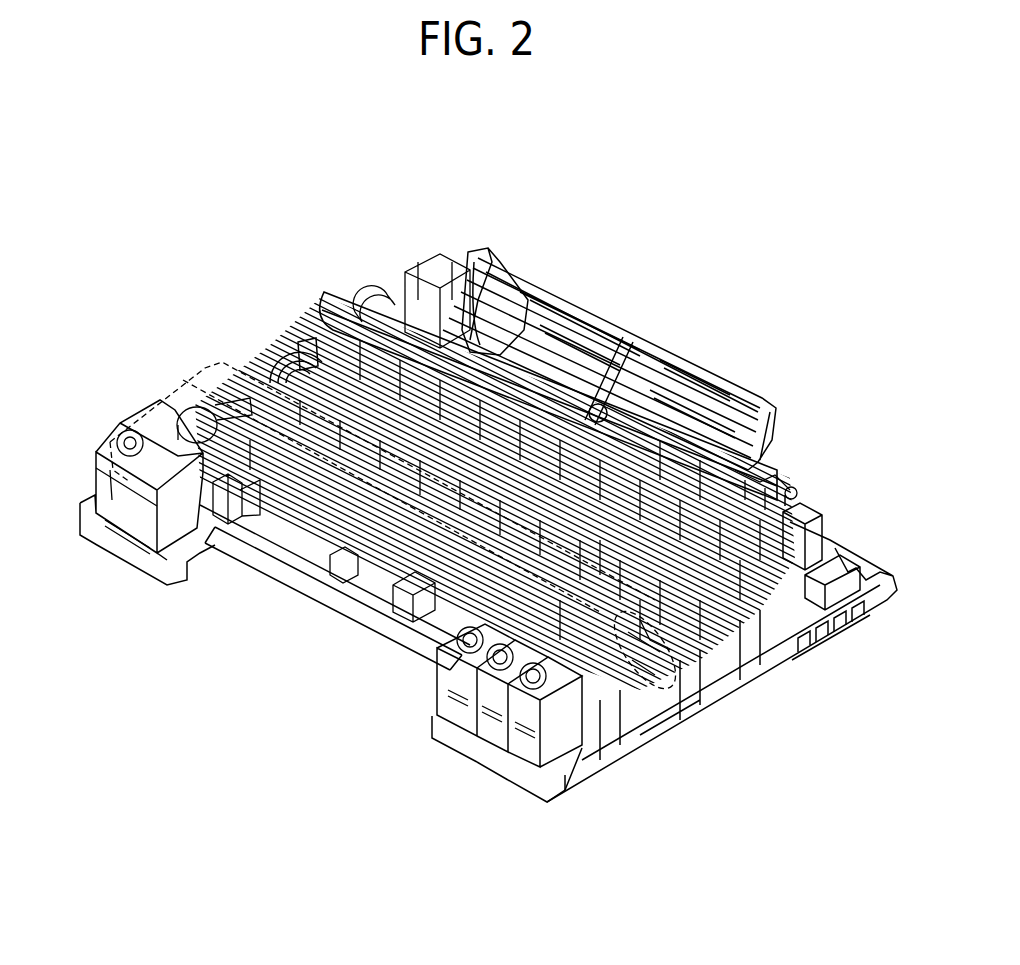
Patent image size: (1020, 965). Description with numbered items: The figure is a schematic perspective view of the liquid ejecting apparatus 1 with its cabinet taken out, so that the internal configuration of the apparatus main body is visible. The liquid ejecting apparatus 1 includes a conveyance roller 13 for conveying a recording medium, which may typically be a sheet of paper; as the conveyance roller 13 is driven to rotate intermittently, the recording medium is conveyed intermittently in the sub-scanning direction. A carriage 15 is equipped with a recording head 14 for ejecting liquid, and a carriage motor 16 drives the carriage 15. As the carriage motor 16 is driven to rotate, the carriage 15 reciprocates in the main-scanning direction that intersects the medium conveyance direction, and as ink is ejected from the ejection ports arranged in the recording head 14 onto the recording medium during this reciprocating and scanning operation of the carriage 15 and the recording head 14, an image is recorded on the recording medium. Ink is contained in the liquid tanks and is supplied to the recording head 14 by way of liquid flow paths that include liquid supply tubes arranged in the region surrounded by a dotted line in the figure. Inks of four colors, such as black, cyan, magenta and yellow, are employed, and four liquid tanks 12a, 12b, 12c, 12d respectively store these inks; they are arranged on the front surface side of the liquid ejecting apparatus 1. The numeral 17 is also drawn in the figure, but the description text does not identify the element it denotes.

The liquid ejecting apparatus 1 is at (280, 252).
The liquid tank 12a is at (122, 502).
The liquid tank 12b is at (463, 697).
The liquid tank 12c is at (493, 710).
The liquid tank 12d is at (525, 732).
The conveyance roller 13 is at (293, 355).
The recording head 14 is at (690, 667).
The carriage 15 is at (757, 472).
The carriage motor 16 is at (377, 303).
The frame 17 is at (333, 527).